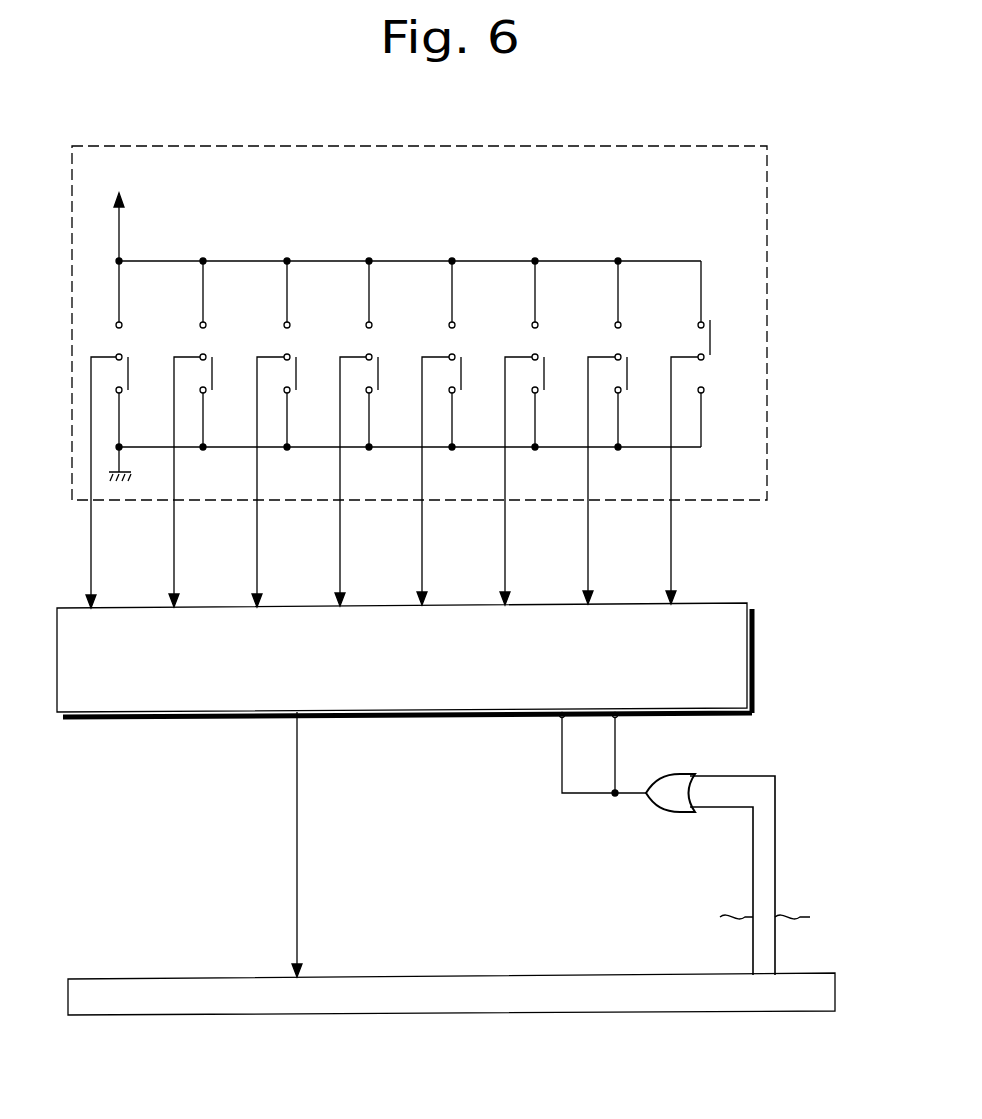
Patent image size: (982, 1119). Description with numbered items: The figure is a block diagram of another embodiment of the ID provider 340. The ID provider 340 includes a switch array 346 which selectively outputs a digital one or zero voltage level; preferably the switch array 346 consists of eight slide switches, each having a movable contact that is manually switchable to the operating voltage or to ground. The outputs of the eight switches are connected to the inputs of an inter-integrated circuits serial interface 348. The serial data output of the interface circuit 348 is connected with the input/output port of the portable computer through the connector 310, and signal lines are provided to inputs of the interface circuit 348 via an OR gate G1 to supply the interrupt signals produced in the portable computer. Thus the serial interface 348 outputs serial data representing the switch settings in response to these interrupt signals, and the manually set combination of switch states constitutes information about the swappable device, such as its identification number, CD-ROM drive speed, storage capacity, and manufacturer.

The connector 310 is at (396, 1012).
The ID provider 340 is at (742, 109).
The switch array 346 is at (767, 385).
The inter-integrated circuits serial interface 348 is at (752, 676).
The OR gate G1 is at (675, 813).